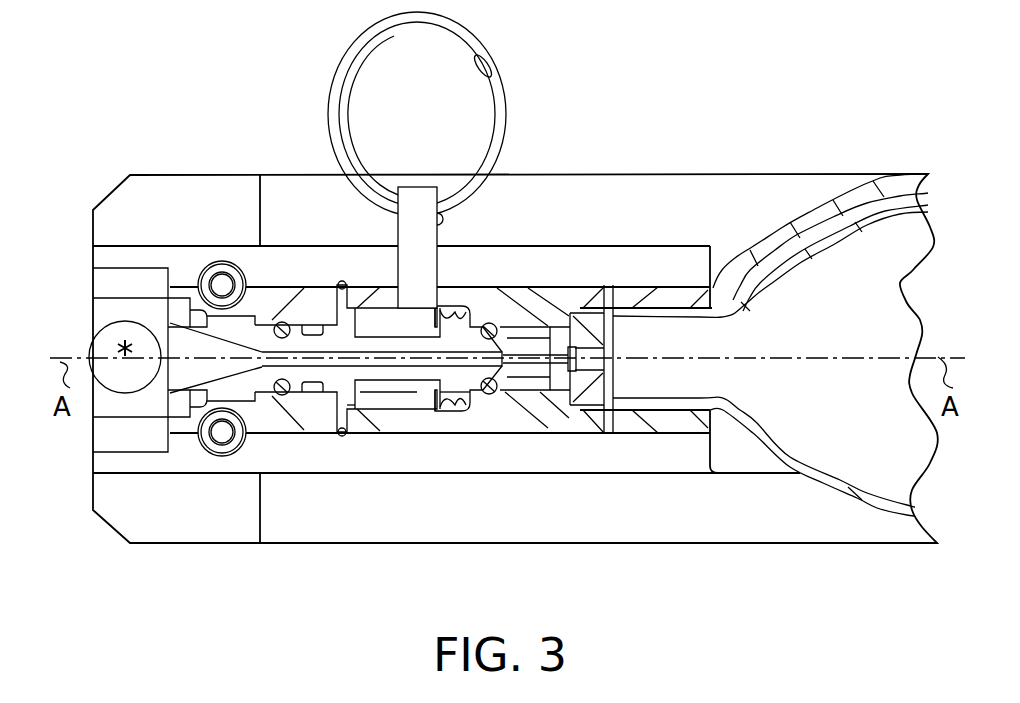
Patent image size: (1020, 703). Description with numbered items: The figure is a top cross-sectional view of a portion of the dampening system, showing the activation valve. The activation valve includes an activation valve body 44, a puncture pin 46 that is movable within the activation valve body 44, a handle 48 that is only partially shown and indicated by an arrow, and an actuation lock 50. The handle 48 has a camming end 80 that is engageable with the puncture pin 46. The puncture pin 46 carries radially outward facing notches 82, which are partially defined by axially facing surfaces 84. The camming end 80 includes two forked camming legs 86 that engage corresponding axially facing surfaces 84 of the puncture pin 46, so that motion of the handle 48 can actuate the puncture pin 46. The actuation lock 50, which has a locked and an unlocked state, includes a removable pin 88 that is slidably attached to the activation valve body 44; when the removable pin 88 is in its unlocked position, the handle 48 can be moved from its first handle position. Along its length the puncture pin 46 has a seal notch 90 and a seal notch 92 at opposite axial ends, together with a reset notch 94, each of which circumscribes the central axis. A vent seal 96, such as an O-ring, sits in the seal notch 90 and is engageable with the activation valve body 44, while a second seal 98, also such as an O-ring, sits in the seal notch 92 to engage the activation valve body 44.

The activation valve body 44 is at (567, 418).
The puncture pin 46 is at (447, 400).
The handle 48 is at (363, 420).
The actuation lock 50 is at (530, 104).
The camming end 80 is at (402, 392).
The radially outward facing notches 82 is at (363, 318).
The axially facing surfaces 84 is at (330, 326).
The forked camming legs 86 is at (396, 302).
The removable pin 88 is at (417, 200).
The seal notch 90 is at (277, 407).
The seal notch 92 is at (488, 410).
The reset notch 94 is at (312, 323).
The vent seal 96 is at (273, 332).
The second seal 98 is at (490, 324).